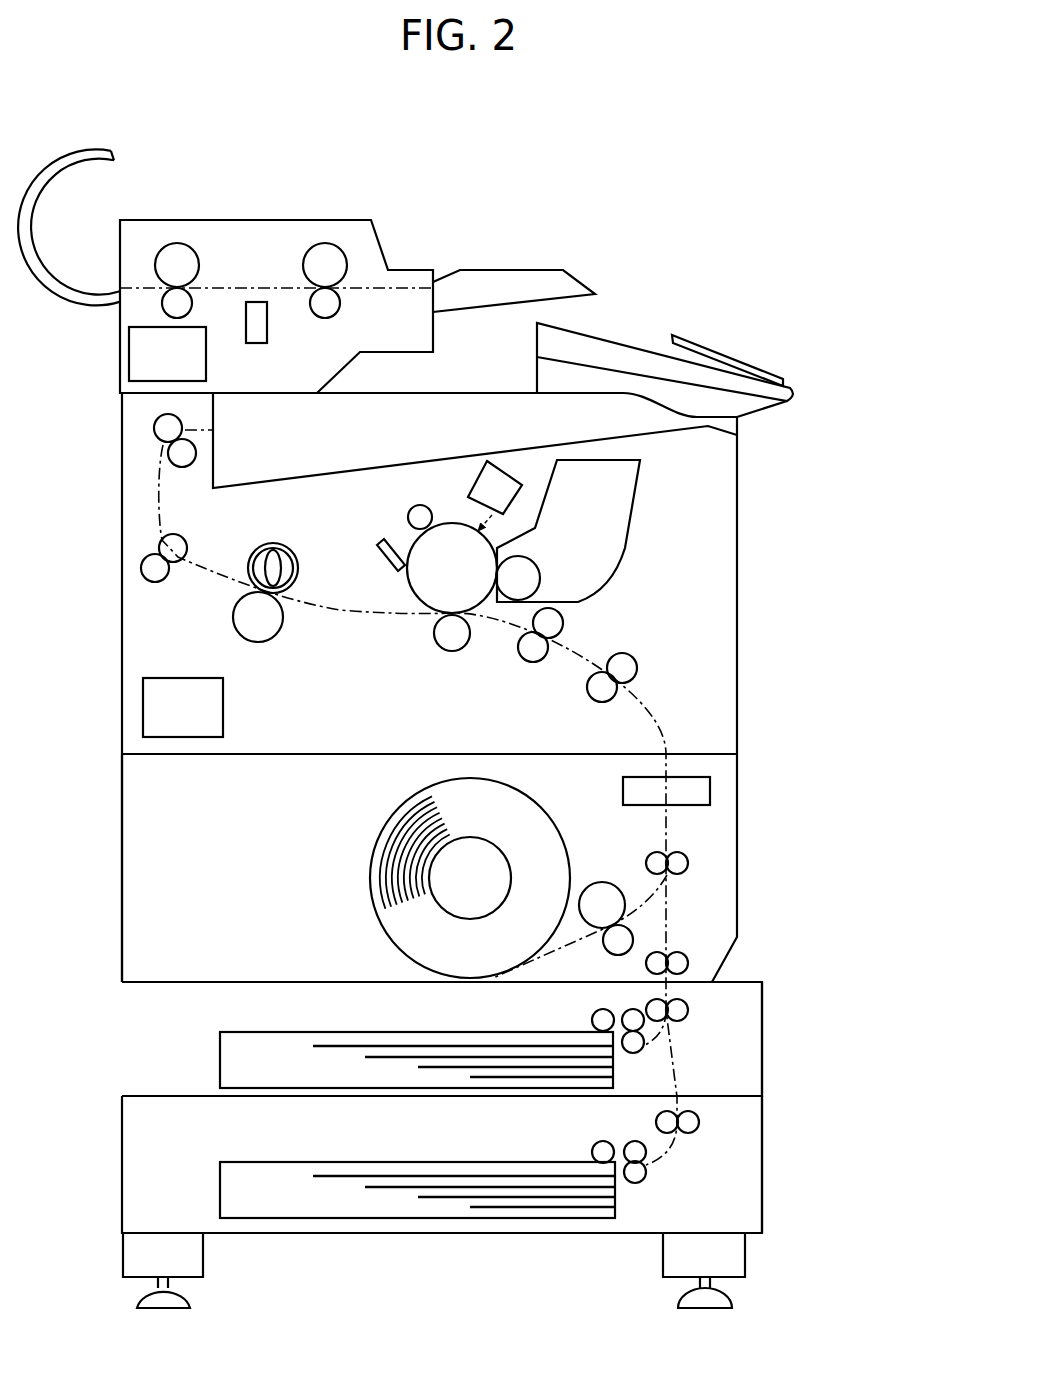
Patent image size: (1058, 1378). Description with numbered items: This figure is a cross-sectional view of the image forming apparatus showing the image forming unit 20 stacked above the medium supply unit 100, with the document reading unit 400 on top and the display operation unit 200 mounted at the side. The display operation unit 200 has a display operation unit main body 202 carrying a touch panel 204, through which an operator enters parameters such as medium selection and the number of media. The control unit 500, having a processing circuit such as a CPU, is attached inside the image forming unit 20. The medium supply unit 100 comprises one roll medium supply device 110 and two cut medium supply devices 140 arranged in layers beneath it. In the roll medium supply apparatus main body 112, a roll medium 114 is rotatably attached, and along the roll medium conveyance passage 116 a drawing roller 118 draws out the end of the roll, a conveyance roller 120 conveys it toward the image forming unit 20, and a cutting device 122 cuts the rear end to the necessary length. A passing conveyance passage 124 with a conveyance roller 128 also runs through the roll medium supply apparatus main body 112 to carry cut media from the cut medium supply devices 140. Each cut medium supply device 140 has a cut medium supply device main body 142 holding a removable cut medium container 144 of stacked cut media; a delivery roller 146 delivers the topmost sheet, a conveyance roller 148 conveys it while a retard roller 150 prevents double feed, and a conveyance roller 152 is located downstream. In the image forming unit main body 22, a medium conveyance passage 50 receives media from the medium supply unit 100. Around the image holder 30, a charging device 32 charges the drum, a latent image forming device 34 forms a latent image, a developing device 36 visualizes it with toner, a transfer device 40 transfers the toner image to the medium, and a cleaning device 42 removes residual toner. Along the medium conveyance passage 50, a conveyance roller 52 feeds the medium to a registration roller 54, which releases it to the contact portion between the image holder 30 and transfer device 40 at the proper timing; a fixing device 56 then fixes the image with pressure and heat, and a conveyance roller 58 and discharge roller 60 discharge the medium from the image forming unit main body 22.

The image forming unit 20 is at (739, 540).
The image forming unit main body 22 is at (740, 643).
The image holder 30 is at (407, 588).
The charging device 32 is at (410, 517).
The latent image forming device 34 is at (505, 458).
The developing device 36 is at (627, 545).
The transfer device 40 is at (438, 648).
The cleaning device 42 is at (380, 550).
The medium conveyance passage 50 is at (160, 498).
The conveyance roller 52 is at (592, 700).
The registration roller 54 is at (526, 660).
The fixing device 56 is at (262, 545).
The conveyance roller 58 is at (160, 582).
The discharge roller 60 is at (154, 430).
The medium supply unit 100 is at (742, 834).
The roll medium supply device 110 is at (121, 845).
The roll medium supply apparatus main body 112 is at (121, 961).
The roll medium 114 is at (378, 873).
The roll medium conveyance passage 116 is at (672, 845).
The drawing roller 118 is at (599, 883).
The conveyance roller 120 is at (652, 852).
The cutting device 122 is at (700, 793).
The passing conveyance passage 124 is at (668, 895).
The conveyance roller 128 is at (681, 955).
The cut medium supply device 140 is at (765, 1012).
The cut medium supply device main body 142 is at (763, 1050).
The cut medium container 144 is at (220, 1056).
The delivery roller 146 is at (595, 1013).
The conveyance roller 148 is at (630, 1008).
The retard roller 150 is at (636, 1054).
The conveyance roller 152 is at (688, 1014).
The display operation unit 200 is at (794, 390).
The display operation unit main body 202 is at (780, 410).
The touch panel 204 is at (705, 350).
The document reading unit 400 is at (243, 220).
The control unit 500 is at (223, 718).